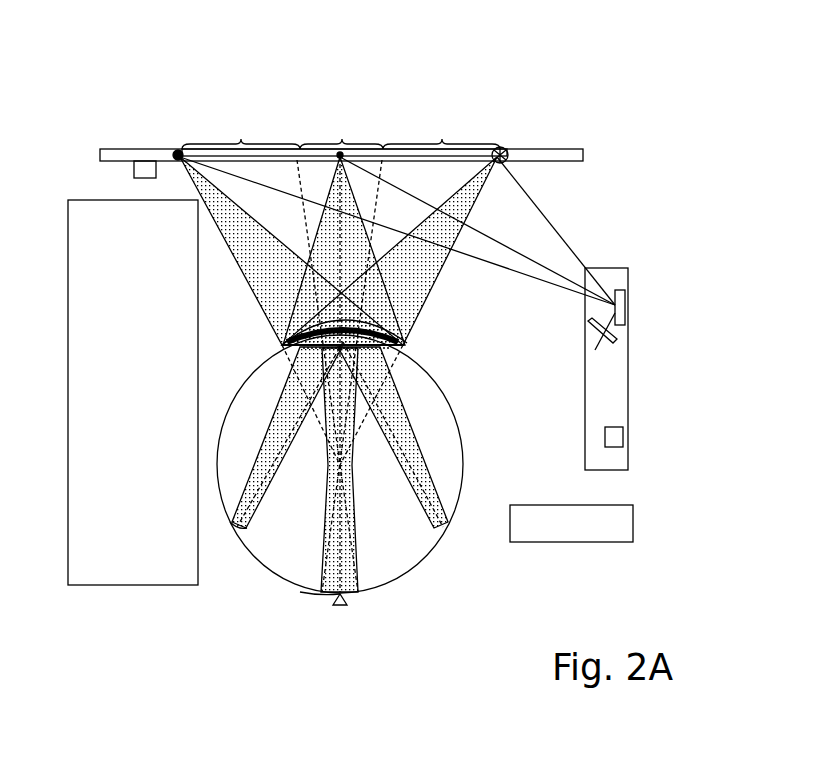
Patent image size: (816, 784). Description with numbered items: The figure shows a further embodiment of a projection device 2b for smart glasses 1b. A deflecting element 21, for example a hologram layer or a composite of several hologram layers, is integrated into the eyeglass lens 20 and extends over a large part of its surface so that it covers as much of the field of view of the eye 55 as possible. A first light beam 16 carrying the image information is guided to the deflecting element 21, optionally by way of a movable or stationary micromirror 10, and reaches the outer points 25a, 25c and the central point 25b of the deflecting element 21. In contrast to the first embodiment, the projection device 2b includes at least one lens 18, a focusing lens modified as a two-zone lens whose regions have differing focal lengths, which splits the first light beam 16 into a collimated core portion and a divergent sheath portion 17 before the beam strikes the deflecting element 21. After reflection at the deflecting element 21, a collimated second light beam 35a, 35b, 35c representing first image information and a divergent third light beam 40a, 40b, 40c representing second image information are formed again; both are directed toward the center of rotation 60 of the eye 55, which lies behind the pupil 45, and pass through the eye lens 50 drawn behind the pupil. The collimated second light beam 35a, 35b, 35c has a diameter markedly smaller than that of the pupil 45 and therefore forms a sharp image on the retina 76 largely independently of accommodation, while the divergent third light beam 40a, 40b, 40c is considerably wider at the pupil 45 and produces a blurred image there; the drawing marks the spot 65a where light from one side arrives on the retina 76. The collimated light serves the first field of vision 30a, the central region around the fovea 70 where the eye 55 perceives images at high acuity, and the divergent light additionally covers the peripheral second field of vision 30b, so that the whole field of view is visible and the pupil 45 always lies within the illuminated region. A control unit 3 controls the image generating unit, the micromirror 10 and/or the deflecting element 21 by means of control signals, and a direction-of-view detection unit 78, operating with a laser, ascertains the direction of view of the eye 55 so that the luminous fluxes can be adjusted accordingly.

The smart glasses 1b is at (566, 78).
The projection device 2b is at (587, 126).
The control unit 3 is at (624, 437).
The micromirror 10 is at (626, 310).
The first light beam 16 is at (600, 352).
The light beam portions 17 is at (543, 280).
The lens 18 is at (618, 340).
The eyeglass lens 20 is at (584, 155).
The deflecting element 21 is at (268, 150).
The outer point 25a is at (503, 149).
The central point 25b is at (376, 150).
The outer point 25c is at (178, 150).
The first field of vision 30a is at (341, 132).
The second field of vision 30b is at (341, 127).
The second light beam 35a is at (232, 254).
The second light beam 35b is at (365, 277).
The second light beam 35c is at (400, 344).
The third light beam 40a is at (232, 231).
The third light beam 40b is at (357, 250).
The third light beam 40c is at (440, 232).
The pupil 45 is at (290, 340).
The eye lens 50 is at (290, 350).
The eye 55 is at (237, 430).
The center of rotation 60 is at (340, 460).
The retinal image spot 65a is at (240, 527).
The fovea 70 is at (340, 605).
The retina 76 is at (308, 594).
The direction-of-view detection unit 78 is at (132, 170).